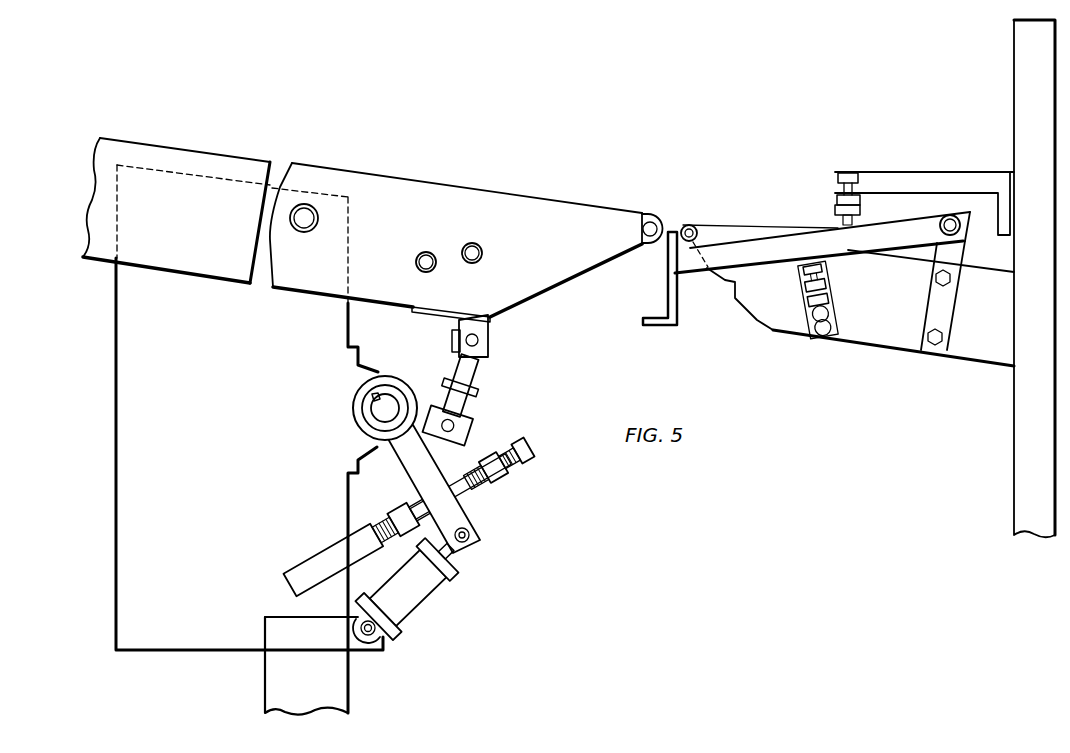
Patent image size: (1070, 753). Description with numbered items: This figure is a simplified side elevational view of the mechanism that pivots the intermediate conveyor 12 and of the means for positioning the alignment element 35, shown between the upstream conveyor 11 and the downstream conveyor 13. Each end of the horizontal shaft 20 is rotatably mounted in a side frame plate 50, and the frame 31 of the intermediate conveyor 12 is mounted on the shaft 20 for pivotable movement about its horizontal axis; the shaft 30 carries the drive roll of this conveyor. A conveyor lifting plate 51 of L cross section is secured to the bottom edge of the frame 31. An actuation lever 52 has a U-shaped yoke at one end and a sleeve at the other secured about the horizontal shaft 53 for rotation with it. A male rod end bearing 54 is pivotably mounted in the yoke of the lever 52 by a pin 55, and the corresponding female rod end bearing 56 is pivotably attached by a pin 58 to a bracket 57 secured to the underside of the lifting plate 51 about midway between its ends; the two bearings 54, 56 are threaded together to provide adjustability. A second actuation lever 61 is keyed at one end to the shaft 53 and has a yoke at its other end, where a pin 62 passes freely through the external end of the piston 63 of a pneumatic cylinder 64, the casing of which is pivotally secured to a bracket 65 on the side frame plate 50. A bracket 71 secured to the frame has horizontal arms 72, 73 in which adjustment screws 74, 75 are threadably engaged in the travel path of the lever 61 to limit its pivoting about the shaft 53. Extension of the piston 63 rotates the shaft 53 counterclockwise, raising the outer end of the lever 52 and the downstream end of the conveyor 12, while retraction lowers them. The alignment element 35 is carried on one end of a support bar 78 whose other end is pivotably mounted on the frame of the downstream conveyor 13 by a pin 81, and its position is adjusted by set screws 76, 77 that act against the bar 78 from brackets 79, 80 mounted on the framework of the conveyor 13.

The upstream conveyor 11 is at (218, 153).
The intermediate conveyor 12 is at (466, 241).
The downstream conveyor 13 is at (860, 294).
The horizontal shaft 20 is at (305, 228).
The shaft 30 is at (419, 257).
The frame 31 is at (403, 178).
The alignment element 35 is at (651, 327).
The side frame plate 50 is at (206, 652).
The conveyor lifting plate 51 is at (412, 311).
The actuation lever 52 is at (475, 396).
The horizontal shaft 53 is at (378, 408).
The male rod end bearing 54 is at (474, 389).
The pin 55 is at (463, 426).
The female rod end bearing 56 is at (479, 366).
The bracket 57 is at (453, 340).
The pin 58 is at (488, 340).
The actuation lever 61 is at (465, 500).
The pin 62 is at (468, 546).
The piston 63 is at (455, 562).
The pneumatic cylinder 64 is at (377, 614).
The bracket 65 is at (267, 616).
The bracket 71 is at (432, 506).
The horizontal arm 72 is at (408, 500).
The horizontal arm 73 is at (478, 498).
The adjustment screw 74 is at (373, 527).
The adjustment screw 75 is at (524, 449).
The set screw 76 is at (823, 296).
The set screw 77 is at (835, 180).
The support bar 78 is at (787, 231).
The bracket 79 is at (830, 285).
The bracket 80 is at (904, 181).
The pin 81 is at (958, 232).